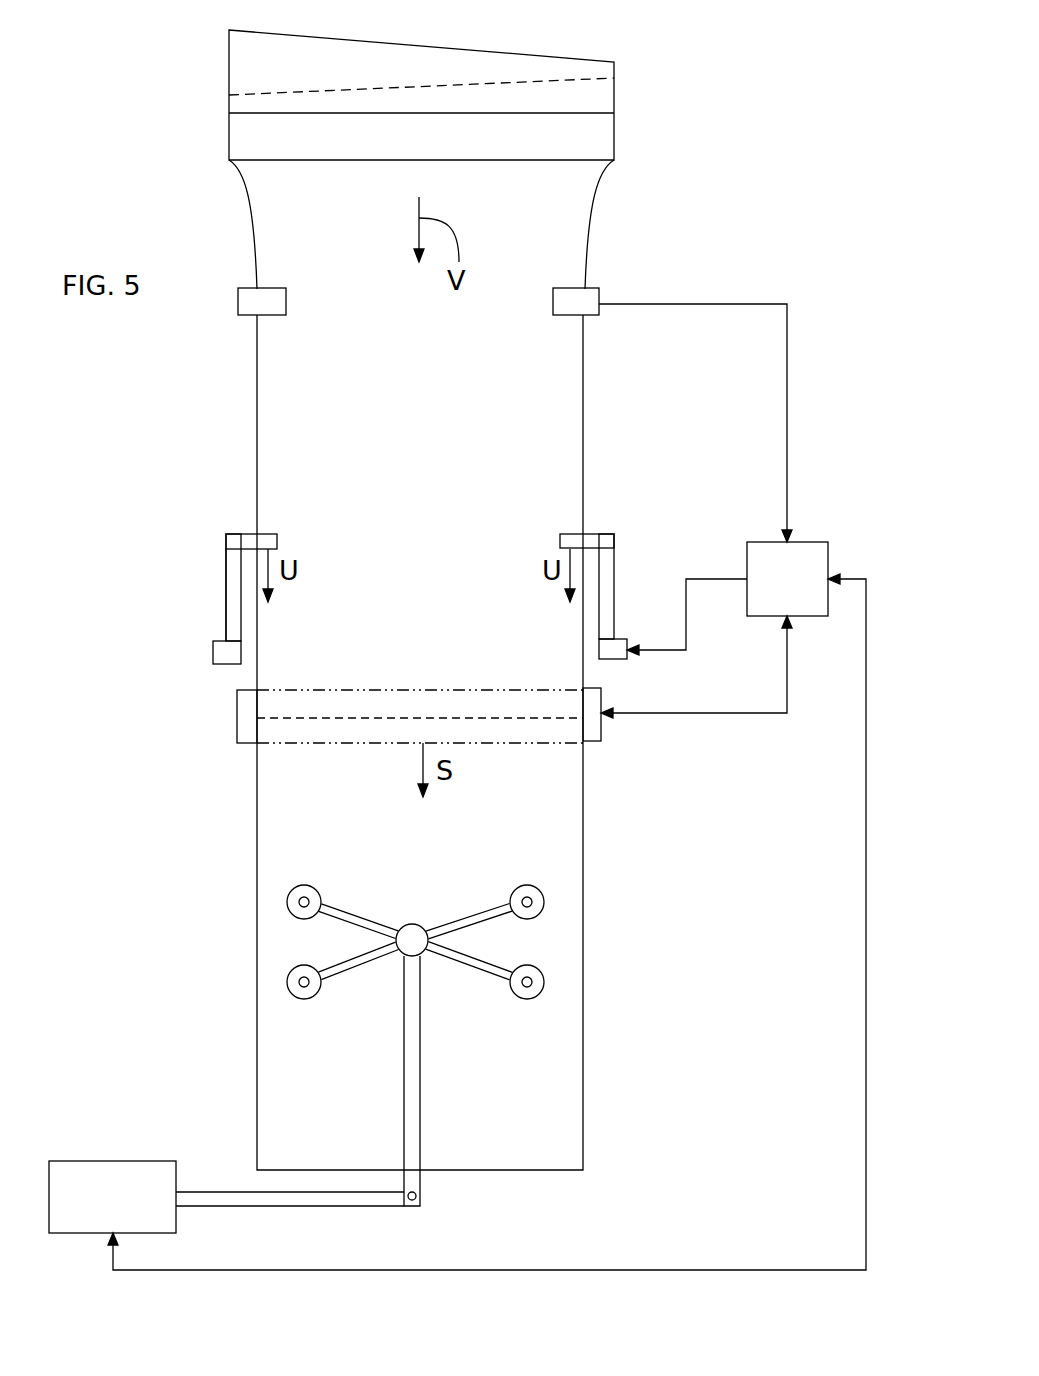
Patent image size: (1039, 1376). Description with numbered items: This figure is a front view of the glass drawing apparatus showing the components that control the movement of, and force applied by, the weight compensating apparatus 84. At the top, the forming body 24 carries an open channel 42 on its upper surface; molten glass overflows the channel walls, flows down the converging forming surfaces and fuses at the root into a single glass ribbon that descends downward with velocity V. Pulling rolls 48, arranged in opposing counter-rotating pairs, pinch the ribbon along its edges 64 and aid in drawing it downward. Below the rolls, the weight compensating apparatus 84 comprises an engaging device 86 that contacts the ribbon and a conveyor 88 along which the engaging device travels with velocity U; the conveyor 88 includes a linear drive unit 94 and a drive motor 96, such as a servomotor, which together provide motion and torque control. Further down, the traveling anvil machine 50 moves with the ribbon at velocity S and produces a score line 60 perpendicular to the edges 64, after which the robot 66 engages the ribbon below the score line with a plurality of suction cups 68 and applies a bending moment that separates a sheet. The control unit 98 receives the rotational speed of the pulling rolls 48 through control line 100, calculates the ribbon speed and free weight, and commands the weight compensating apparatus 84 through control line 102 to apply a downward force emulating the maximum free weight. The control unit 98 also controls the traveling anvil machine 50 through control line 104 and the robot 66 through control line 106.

The forming body 24 is at (614, 135).
The open channel 42 is at (427, 85).
The pulling rolls 48 is at (275, 288).
The traveling anvil machine 50 is at (237, 720).
The score line 60 is at (277, 718).
The edges 64 is at (257, 451).
The robot 66 is at (372, 1021).
The suction cups 68 is at (307, 885).
The weight compensating apparatus 84 is at (366, 543).
The engaging device 86 is at (268, 534).
The conveyor 88 is at (222, 553).
The linear drive unit 94 is at (226, 610).
The drive motor 96 is at (215, 641).
The control unit 98 is at (757, 542).
The control line 100 is at (651, 304).
The control line 102 is at (664, 650).
The control line 104 is at (672, 713).
The control line 106 is at (615, 1270).